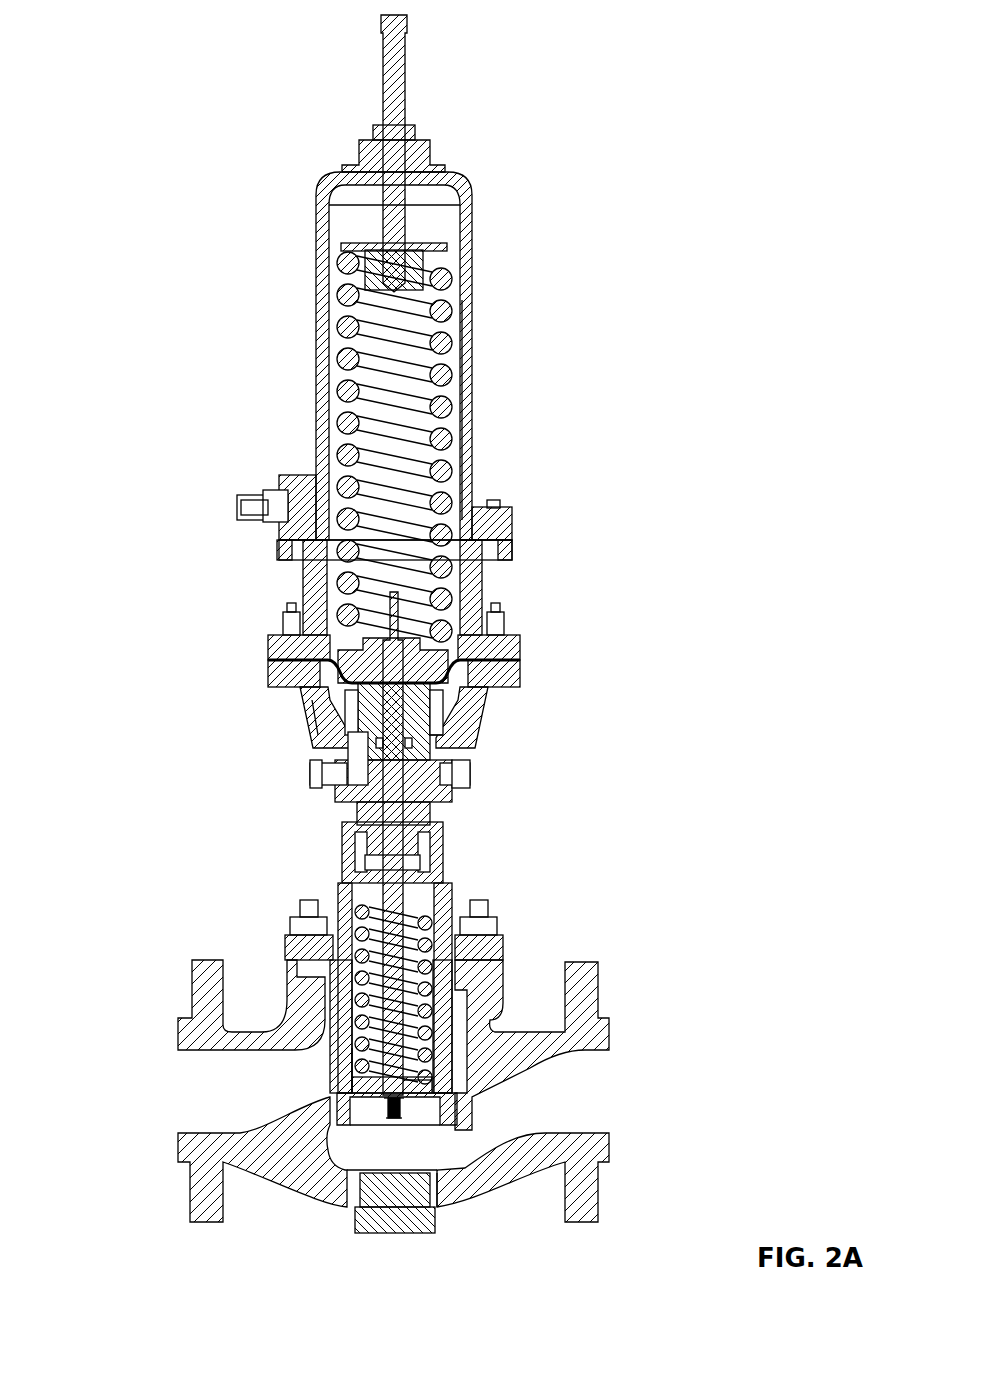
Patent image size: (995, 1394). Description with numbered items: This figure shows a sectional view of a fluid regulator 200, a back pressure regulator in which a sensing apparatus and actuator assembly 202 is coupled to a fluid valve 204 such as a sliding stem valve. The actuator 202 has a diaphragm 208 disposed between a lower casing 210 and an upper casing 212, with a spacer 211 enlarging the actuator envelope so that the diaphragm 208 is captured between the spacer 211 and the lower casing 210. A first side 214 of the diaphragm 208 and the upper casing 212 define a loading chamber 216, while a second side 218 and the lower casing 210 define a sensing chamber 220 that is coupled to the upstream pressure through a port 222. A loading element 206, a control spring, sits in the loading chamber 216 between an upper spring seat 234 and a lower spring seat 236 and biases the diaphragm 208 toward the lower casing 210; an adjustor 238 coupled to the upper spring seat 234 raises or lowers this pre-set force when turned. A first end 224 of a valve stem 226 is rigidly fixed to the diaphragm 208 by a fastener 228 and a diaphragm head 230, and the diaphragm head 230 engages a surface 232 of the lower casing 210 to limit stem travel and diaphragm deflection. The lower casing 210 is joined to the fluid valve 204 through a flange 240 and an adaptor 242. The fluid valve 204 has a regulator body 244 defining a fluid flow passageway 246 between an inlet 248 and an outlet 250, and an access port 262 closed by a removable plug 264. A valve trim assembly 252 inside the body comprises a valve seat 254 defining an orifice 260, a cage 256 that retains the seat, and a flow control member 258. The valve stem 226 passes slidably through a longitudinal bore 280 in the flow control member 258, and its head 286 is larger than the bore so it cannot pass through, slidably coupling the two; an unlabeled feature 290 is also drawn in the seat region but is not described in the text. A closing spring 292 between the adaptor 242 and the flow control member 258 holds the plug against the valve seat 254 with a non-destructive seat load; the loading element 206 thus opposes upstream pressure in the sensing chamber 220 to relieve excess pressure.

The fluid regulator 200 is at (118, 68).
The sensing apparatus and actuator assembly 202 is at (600, 623).
The fluid valve 204 is at (618, 962).
The loading element 206 is at (455, 305).
The diaphragm 208 is at (448, 662).
The lower casing 210 is at (318, 745).
The spacer 211 is at (305, 586).
The upper casing 212 is at (316, 315).
The first side 214 is at (520, 640).
The loading chamber 216 is at (458, 390).
The second side 218 is at (440, 705).
The sensing chamber 220 is at (450, 730).
The port 222 is at (355, 778).
The first end 224 is at (340, 667).
The valve stem 226 is at (385, 885).
The fastener 228 is at (310, 512).
The diaphragm head 230 is at (425, 752).
The surface 232 is at (320, 722).
The upper spring seat 234 is at (345, 272).
The lower spring seat 236 is at (268, 645).
The adjustor 238 is at (383, 100).
The flange 240 is at (498, 950).
The adaptor 242 is at (440, 858).
The regulator body 244 is at (445, 1165).
The fluid flow passageway 246 is at (421, 1163).
The inlet 248 is at (610, 1090).
The outlet 250 is at (180, 1100).
The valve trim assembly 252 is at (500, 1022).
The valve seat 254 is at (440, 1110).
The cage 256 is at (445, 1090).
The flow control member 258 is at (345, 1050).
The orifice 260 is at (415, 1090).
The access port 262 is at (380, 1150).
The removable plug 264 is at (430, 1220).
The longitudinal bore 280 is at (410, 1110).
The head 286 is at (395, 1102).
The orifice 290 is at (390, 1100).
The closing spring 292 is at (360, 975).